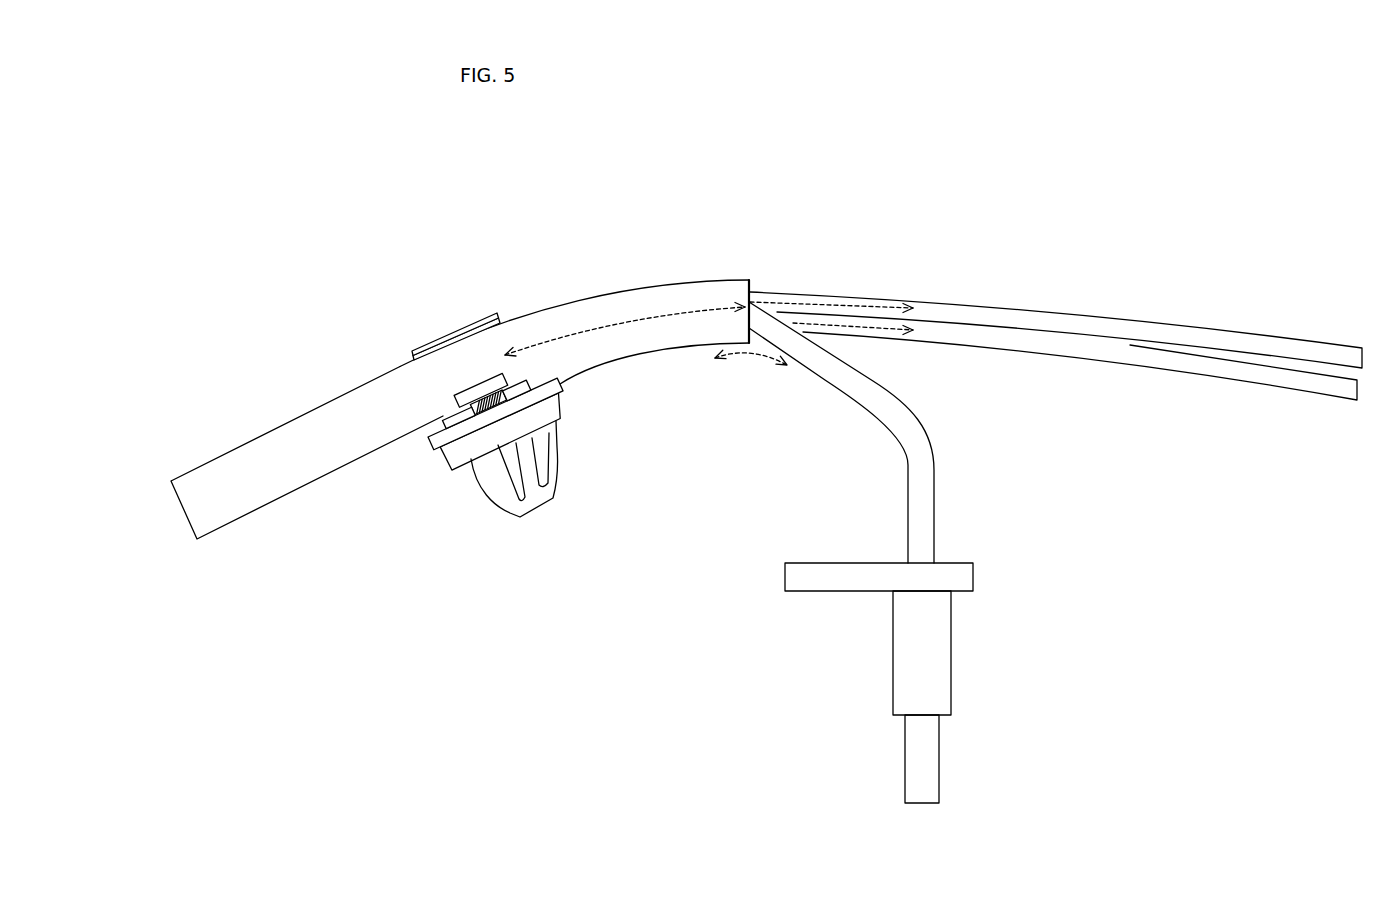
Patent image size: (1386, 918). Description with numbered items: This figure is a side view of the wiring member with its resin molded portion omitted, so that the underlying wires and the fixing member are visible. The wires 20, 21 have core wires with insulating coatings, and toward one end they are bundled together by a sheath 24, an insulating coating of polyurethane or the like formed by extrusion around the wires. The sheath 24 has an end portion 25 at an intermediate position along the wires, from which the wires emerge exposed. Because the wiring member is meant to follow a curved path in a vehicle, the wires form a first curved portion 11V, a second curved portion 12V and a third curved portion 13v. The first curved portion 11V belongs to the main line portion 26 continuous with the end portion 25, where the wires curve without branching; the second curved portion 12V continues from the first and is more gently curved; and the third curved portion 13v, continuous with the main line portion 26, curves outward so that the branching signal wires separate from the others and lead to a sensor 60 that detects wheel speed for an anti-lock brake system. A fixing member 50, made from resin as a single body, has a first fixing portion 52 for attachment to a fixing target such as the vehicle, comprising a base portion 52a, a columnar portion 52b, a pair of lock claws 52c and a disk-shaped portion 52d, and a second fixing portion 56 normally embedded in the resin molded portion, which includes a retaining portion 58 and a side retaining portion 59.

The first curved portion 11V is at (620, 318).
The second curved portion 12V is at (845, 318).
The third curved portion 13v is at (752, 352).
The wire 20 is at (1218, 343).
The wire 21 is at (1276, 390).
The sheath 24 is at (533, 313).
The end portion 25 is at (753, 279).
The main line portion 26 is at (250, 514).
The fixing member 50 is at (507, 472).
The first fixing portion 52 is at (526, 474).
The base portion 52a is at (495, 414).
The columnar portion 52b is at (556, 481).
The lock claw 52c is at (563, 442).
The disk-shaped portion 52d is at (504, 432).
The second fixing portion 56 is at (453, 306).
The retaining portion 58 is at (415, 353).
The side retaining portion 59 is at (445, 420).
The sensor 60 is at (951, 649).